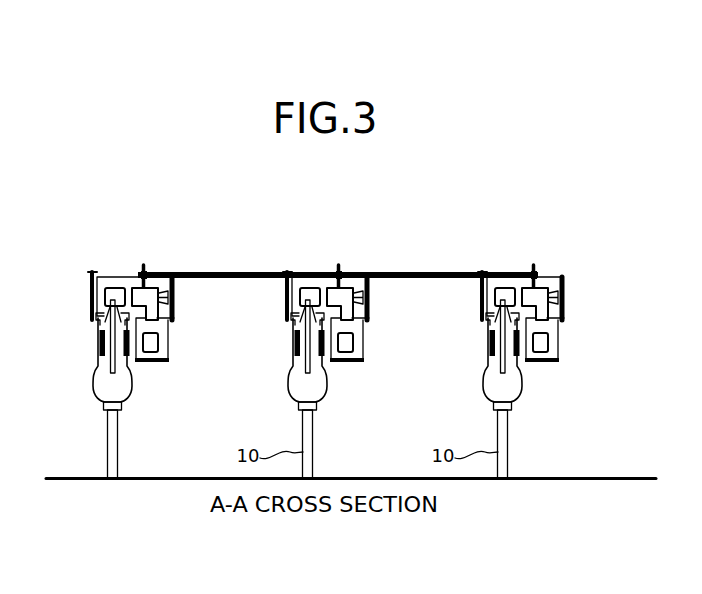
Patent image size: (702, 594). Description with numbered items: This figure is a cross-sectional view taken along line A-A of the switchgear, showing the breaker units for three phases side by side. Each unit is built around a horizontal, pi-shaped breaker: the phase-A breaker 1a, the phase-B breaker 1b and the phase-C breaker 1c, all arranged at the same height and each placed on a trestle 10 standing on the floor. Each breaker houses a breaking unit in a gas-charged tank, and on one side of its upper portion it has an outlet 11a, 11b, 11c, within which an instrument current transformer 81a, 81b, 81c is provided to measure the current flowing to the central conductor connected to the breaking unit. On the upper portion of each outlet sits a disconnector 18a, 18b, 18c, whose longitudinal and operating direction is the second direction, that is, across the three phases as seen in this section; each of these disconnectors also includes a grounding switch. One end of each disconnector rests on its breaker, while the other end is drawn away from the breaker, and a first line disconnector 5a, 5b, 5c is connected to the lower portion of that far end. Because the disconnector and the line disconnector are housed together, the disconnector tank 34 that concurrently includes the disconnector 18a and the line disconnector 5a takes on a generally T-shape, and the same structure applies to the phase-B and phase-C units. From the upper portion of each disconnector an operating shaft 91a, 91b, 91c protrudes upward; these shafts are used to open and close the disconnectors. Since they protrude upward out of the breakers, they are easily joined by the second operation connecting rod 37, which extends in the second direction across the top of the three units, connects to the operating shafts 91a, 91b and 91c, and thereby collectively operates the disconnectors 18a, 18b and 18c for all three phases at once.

The breaker 1a is at (481, 360).
The breaker 1b is at (286, 360).
The breaker 1c is at (106, 383).
The line disconnector 5a is at (566, 340).
The line disconnector 5b is at (371, 340).
The line disconnector 5c is at (163, 330).
The trestle 10 is at (108, 452).
The outlet 11a is at (462, 348).
The outlet 11b is at (267, 348).
The outlet 11c is at (103, 362).
The disconnector 18a is at (513, 262).
The disconnector 18b is at (318, 262).
The disconnector 18c is at (124, 286).
The disconnector tank 34 is at (533, 269).
The operation connecting rod 37 is at (222, 270).
The instrument current transformer 81a is at (547, 369).
The instrument current transformer 81b is at (353, 369).
The instrument current transformer 81c is at (130, 356).
The operating shaft 91a is at (554, 233).
The operating shaft 91b is at (358, 233).
The operating shaft 91c is at (144, 272).